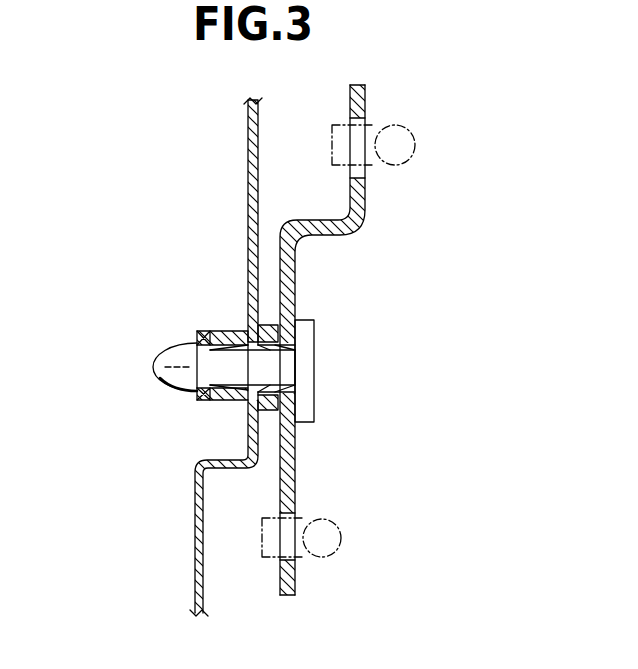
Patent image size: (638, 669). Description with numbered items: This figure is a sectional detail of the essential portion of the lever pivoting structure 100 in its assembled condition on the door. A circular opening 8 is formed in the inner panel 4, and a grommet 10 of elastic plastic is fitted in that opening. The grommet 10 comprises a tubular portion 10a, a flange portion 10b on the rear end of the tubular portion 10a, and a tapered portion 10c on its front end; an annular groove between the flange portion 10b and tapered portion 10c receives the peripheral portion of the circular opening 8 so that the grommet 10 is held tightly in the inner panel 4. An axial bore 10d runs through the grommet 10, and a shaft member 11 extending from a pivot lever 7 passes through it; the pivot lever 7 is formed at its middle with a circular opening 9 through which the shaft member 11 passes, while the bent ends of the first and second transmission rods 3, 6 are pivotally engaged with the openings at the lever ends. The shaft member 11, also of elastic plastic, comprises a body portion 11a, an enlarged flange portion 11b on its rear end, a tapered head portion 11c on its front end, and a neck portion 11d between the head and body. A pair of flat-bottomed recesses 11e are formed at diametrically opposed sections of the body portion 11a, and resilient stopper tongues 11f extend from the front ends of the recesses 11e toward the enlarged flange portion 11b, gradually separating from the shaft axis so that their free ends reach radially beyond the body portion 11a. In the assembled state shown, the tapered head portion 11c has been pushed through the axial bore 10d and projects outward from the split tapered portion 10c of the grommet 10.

The first transmission rod 3 is at (341, 536).
The inner panel 4 is at (250, 150).
The second transmission rod 6 is at (406, 131).
The pivot lever 7 is at (368, 206).
The circular opening 8 is at (213, 445).
The circular opening 9 is at (312, 398).
The grommet 10 is at (255, 349).
The tubular portion 10a is at (247, 330).
The flange portion 10b is at (262, 325).
The tapered portion 10c is at (215, 415).
The axial bore 10d is at (130, 361).
The shaft member 11 is at (360, 340).
The body portion 11a is at (305, 372).
The enlarged flange portion 11b is at (310, 420).
The tapered head portion 11c is at (160, 378).
The neck portion 11d is at (200, 335).
The flat-bottomed recesses 11e is at (300, 352).
The resilient stopper tongues 11f is at (247, 332).
The lever pivoting structure 100 is at (532, 106).